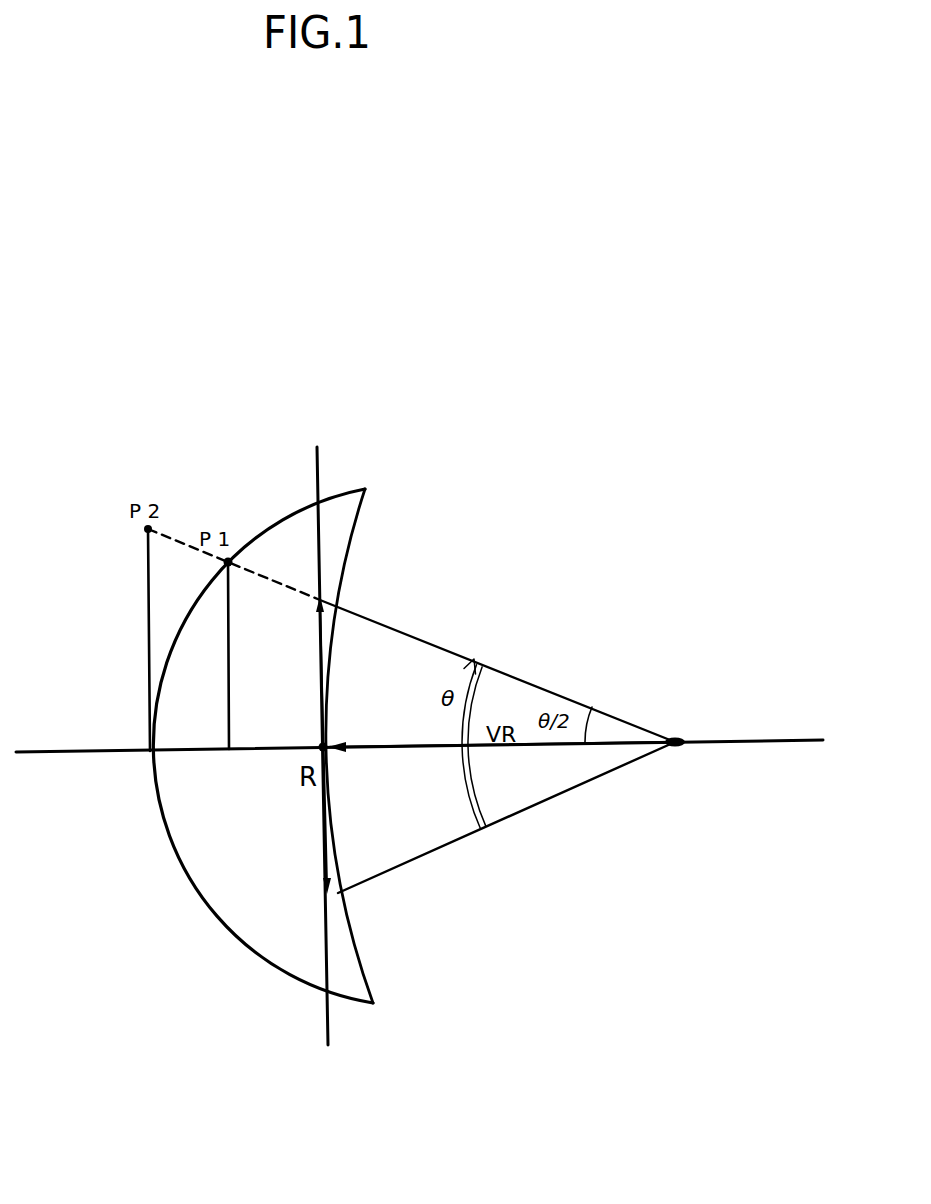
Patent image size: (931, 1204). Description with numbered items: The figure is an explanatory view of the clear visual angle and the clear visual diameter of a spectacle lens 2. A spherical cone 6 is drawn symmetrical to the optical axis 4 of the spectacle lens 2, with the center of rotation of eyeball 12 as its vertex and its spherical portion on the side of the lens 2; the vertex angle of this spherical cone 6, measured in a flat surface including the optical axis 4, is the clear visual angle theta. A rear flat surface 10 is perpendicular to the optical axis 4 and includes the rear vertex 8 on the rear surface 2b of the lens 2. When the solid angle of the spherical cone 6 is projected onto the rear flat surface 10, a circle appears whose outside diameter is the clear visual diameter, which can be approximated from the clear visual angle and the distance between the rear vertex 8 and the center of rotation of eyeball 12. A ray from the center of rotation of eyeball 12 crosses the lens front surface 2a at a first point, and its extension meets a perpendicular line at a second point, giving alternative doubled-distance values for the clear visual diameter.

The spectacle lens 2 is at (261, 746).
The lens front surface 2a is at (152, 788).
The rear surface 2b is at (352, 535).
The optical axis 4 is at (40, 757).
The spherical cone 6 is at (398, 638).
The rear vertex 8 is at (321, 744).
The rear flat surface 10 is at (331, 1031).
The center of rotation of eyeball 12 is at (681, 747).